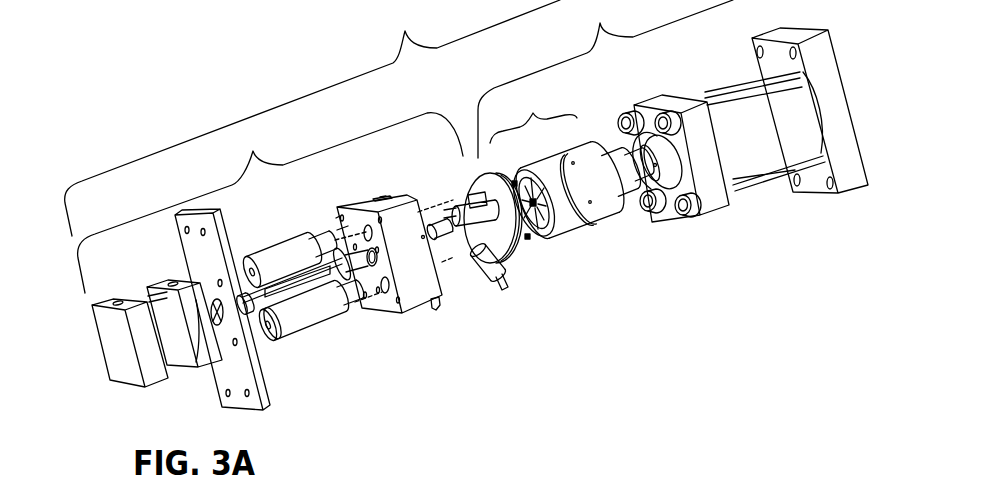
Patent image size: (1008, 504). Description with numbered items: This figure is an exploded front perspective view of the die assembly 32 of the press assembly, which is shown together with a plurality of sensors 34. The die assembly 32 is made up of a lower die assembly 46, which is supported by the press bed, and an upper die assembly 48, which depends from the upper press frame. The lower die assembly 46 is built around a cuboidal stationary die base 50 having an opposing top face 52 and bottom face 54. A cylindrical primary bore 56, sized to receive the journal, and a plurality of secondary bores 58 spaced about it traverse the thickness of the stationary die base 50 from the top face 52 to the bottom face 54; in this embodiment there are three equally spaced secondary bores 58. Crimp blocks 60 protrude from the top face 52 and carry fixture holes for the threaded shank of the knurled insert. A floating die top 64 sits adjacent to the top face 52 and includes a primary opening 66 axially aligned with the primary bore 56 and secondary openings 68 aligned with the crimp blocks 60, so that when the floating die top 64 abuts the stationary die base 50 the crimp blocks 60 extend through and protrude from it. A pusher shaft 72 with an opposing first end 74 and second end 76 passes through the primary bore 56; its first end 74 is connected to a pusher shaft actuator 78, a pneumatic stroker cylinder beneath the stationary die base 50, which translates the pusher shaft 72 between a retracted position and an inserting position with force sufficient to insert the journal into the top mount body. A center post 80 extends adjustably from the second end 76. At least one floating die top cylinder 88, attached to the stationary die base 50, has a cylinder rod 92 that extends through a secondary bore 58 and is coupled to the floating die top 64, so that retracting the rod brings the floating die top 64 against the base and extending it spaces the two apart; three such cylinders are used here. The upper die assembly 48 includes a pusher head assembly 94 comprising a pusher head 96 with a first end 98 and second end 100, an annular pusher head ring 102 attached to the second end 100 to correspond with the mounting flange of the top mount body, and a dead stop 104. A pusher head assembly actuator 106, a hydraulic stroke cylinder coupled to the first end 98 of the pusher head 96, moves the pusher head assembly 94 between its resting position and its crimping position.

The die assembly 32 is at (312, 118).
The sensors 34 is at (494, 272).
The lower die assembly 46 is at (270, 203).
The upper die assembly 48 is at (605, 79).
The stationary die base 50 is at (337, 200).
The top face 52 is at (383, 197).
The bottom face 54 is at (336, 218).
The primary bore 56 is at (344, 310).
The secondary bores 58 is at (385, 292).
The crimp blocks 60 is at (415, 313).
The floating die top 64 is at (485, 178).
The primary opening 66 is at (487, 228).
The secondary openings 68 is at (504, 288).
The pusher shaft 72 is at (289, 292).
The first end 74 is at (243, 292).
The second end 76 is at (320, 260).
The pusher shaft actuator 78 is at (194, 368).
The center post 80 is at (438, 228).
The floating die top cylinder 88 is at (299, 340).
The cylinder rod 92 is at (290, 292).
The pusher head assembly 94 is at (572, 199).
The pusher head 96 is at (610, 222).
The first end 98 is at (623, 202).
The second end 100 is at (586, 228).
The pusher head ring 102 is at (548, 242).
The dead stop 104 is at (516, 248).
The pusher head assembly actuator 106 is at (770, 184).